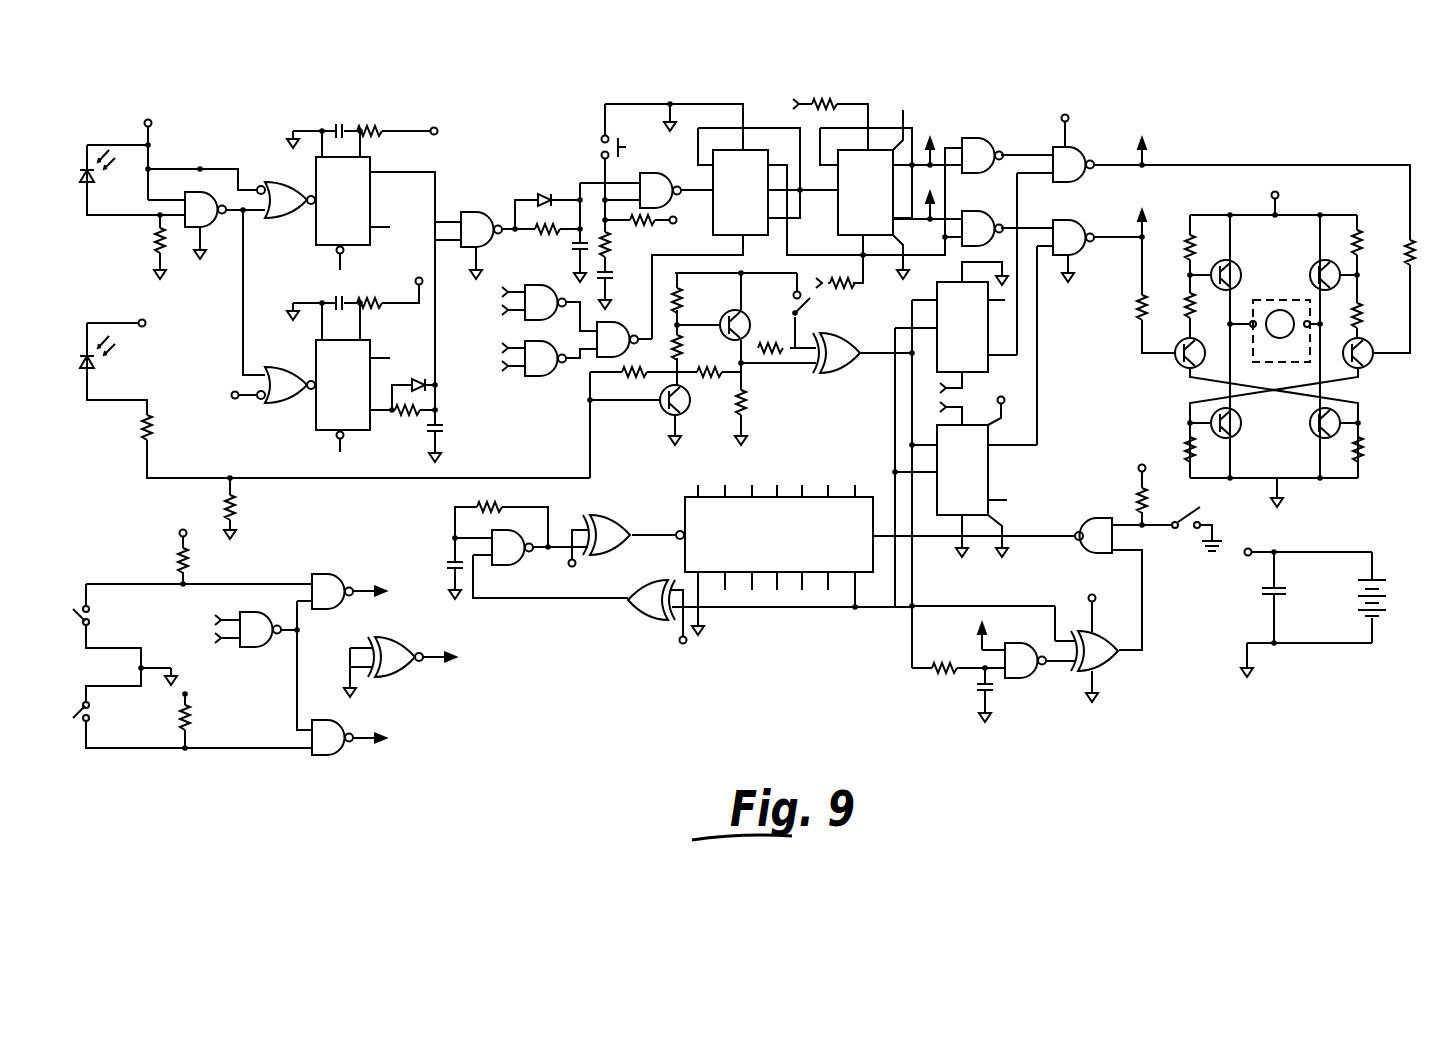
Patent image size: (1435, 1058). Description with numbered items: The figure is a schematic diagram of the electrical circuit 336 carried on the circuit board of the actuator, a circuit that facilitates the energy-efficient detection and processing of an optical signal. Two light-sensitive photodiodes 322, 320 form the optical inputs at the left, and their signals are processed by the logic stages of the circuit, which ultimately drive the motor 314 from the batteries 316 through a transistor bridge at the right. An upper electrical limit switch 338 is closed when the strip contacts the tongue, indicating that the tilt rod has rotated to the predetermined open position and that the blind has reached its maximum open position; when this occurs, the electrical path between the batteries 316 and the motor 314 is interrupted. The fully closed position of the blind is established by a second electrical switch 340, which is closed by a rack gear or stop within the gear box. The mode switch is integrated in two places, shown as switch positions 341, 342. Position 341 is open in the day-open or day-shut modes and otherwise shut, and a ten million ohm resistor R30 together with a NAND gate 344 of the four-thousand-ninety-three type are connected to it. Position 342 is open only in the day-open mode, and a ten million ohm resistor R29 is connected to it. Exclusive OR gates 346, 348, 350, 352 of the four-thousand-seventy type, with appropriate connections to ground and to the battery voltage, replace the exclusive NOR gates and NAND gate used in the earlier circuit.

The electrical circuit 336 is at (1102, 82).
The photodiode 322 is at (82, 178).
The photodiode 320 is at (82, 366).
The motor 314 is at (1291, 292).
The switch position 342 is at (802, 308).
The resistor R29 is at (778, 326).
The exclusive OR gate 352 is at (830, 374).
The exclusive OR gate 350 is at (612, 502).
The exclusive OR gate 348 is at (652, 622).
The upper electrical limit switch 338 is at (84, 612).
The electrical switch 340 is at (80, 716).
The NAND gate 344 is at (1100, 517).
The exclusive OR gate 346 is at (1100, 673).
The switch position 341 is at (1188, 514).
The resistor R30 is at (1167, 495).
The batteries 316 is at (1378, 602).